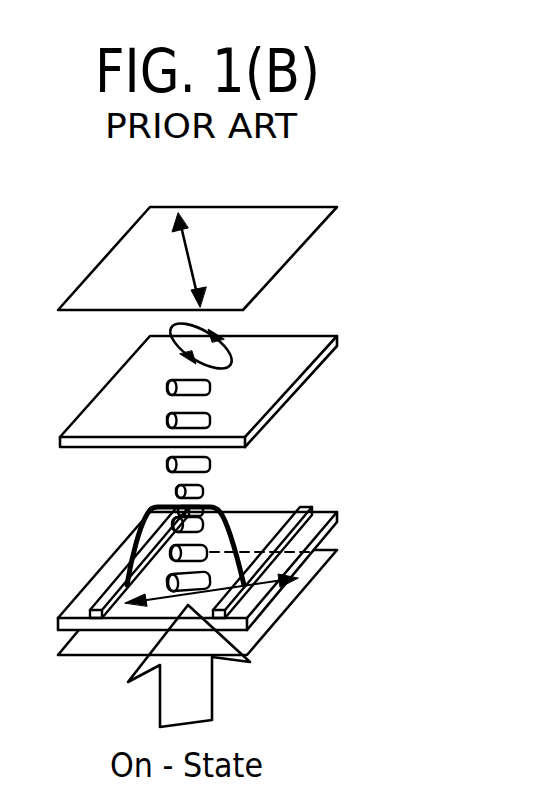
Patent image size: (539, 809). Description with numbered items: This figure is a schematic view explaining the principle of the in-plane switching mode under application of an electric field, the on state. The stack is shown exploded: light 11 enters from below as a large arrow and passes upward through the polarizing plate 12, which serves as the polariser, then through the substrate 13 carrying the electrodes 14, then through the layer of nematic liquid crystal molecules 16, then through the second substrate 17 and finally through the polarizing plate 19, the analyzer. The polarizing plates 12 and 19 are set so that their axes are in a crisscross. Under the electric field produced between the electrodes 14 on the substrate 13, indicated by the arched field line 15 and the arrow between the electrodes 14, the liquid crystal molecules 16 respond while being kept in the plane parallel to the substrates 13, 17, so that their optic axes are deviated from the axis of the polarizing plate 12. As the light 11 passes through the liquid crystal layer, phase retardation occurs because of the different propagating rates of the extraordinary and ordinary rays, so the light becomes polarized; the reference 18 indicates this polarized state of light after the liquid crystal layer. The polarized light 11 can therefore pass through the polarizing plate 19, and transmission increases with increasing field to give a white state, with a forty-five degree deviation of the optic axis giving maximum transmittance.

The light 11 is at (200, 703).
The polarizing plate 12 is at (248, 640).
The substrate 13 is at (263, 612).
The electrodes 14 is at (295, 562).
The electric field 15 is at (147, 509).
The nematic liquid crystal molecules 16 is at (210, 462).
The substrate 17 is at (280, 407).
The polarized state of light 18 is at (235, 360).
The polarizing plate 19 is at (313, 240).